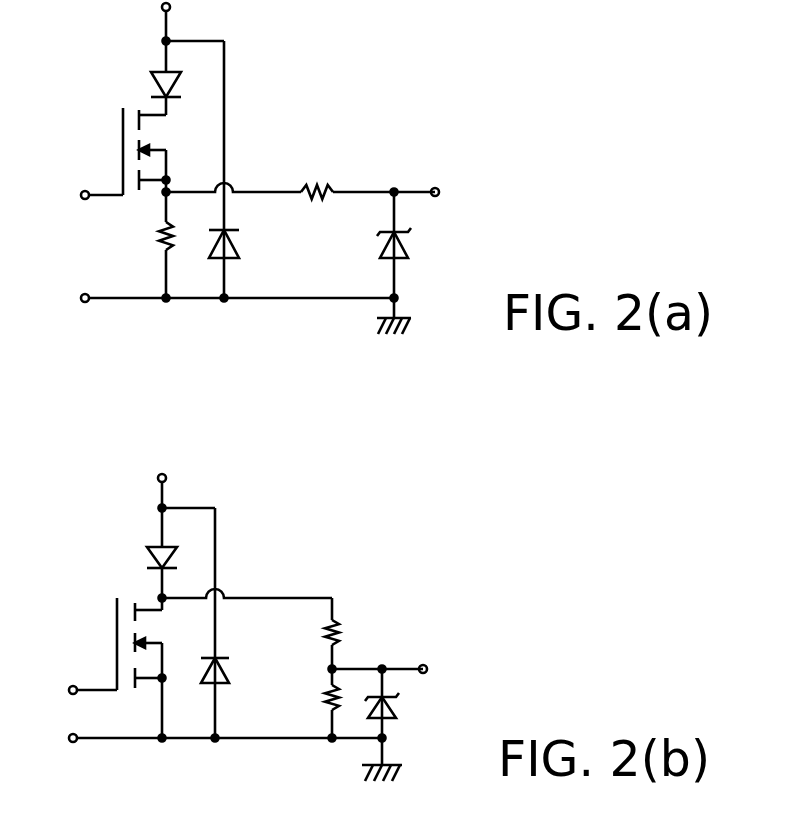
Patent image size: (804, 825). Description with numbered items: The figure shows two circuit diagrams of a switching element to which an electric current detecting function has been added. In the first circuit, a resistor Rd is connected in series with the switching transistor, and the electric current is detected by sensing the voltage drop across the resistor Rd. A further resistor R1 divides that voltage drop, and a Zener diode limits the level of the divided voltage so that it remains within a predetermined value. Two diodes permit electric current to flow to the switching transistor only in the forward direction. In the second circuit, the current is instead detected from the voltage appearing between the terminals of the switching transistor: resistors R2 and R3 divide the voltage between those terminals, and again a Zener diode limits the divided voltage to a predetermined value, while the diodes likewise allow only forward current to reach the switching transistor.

The resistor Rd is at (160, 236).
The resistor R1 is at (318, 185).
The resistor R2 is at (325, 632).
The resistor R3 is at (325, 702).